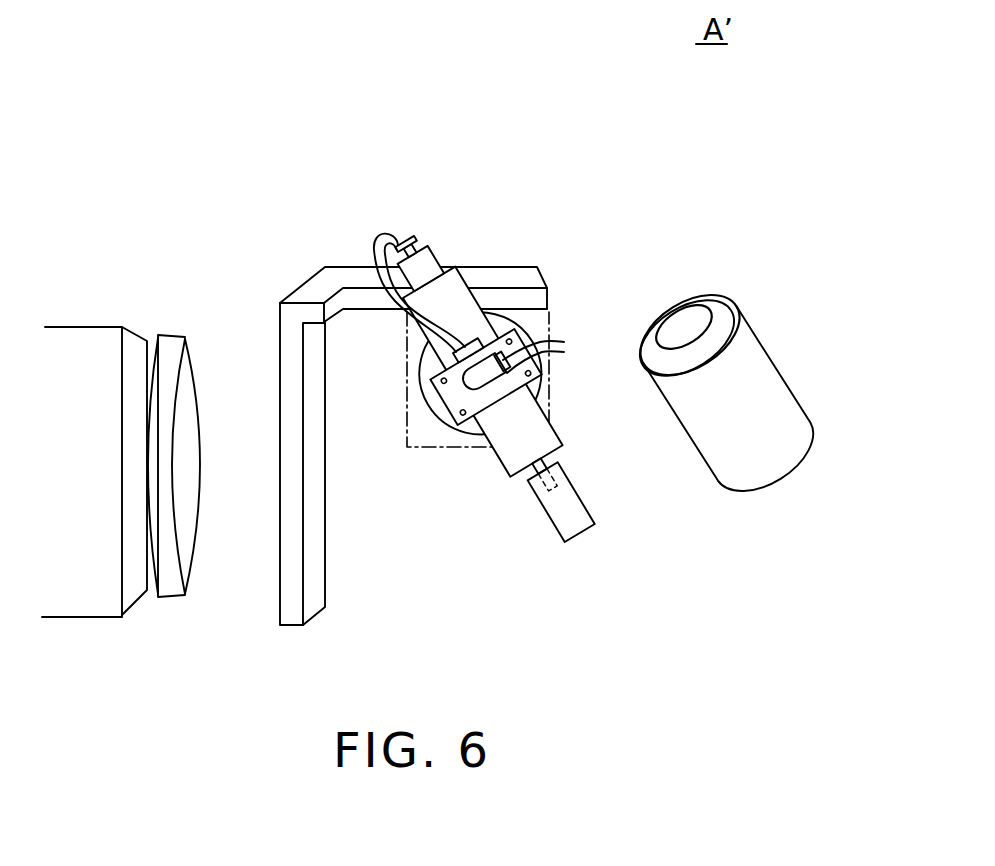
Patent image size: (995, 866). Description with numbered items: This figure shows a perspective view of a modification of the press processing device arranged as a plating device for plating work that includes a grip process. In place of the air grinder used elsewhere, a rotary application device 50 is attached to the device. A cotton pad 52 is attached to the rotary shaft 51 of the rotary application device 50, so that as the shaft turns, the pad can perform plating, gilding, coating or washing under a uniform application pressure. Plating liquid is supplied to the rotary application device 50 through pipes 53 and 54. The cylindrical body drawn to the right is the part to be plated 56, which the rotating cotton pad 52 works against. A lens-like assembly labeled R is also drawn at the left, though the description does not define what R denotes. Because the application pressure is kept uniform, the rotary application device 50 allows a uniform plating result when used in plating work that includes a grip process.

The lens unit R is at (79, 327).
The rotary application device 50 is at (494, 453).
The rotary shaft 51 is at (552, 466).
The cotton pad 52 is at (558, 528).
The pipe 53 is at (563, 341).
The pipe 54 is at (395, 232).
The part to be plated 56 is at (749, 349).